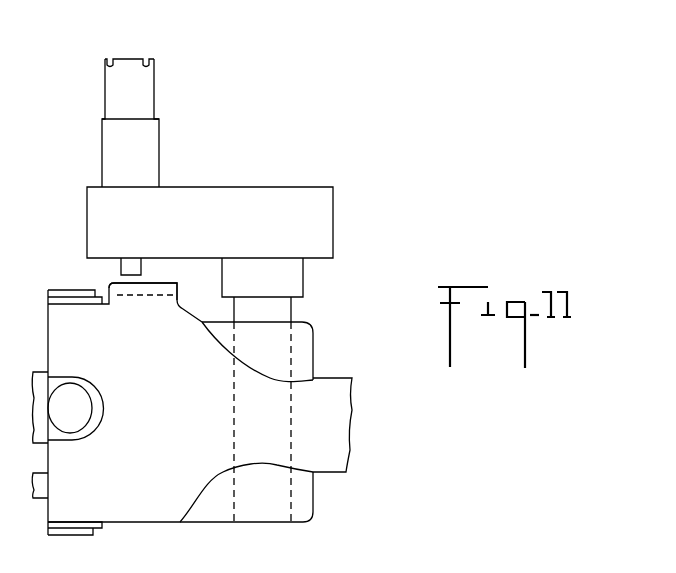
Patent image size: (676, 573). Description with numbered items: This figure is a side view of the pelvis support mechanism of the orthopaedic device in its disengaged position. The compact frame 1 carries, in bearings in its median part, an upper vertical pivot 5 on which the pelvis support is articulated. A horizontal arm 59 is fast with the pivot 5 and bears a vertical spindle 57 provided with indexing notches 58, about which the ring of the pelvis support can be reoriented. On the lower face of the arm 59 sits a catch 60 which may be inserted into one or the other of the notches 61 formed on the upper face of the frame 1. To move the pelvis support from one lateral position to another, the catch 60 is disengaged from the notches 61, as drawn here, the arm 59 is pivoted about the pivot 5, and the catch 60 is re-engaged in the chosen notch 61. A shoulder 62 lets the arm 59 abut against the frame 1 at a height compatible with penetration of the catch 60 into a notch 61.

The frame 1 is at (343, 421).
The upper vertical pivot 5 is at (285, 313).
The vertical spindle 57 is at (110, 98).
The indexing notches 58 is at (110, 61).
The horizontal arm 59 is at (238, 196).
The catch 60 is at (131, 266).
The notches 61 is at (170, 289).
The shoulder 62 is at (297, 281).